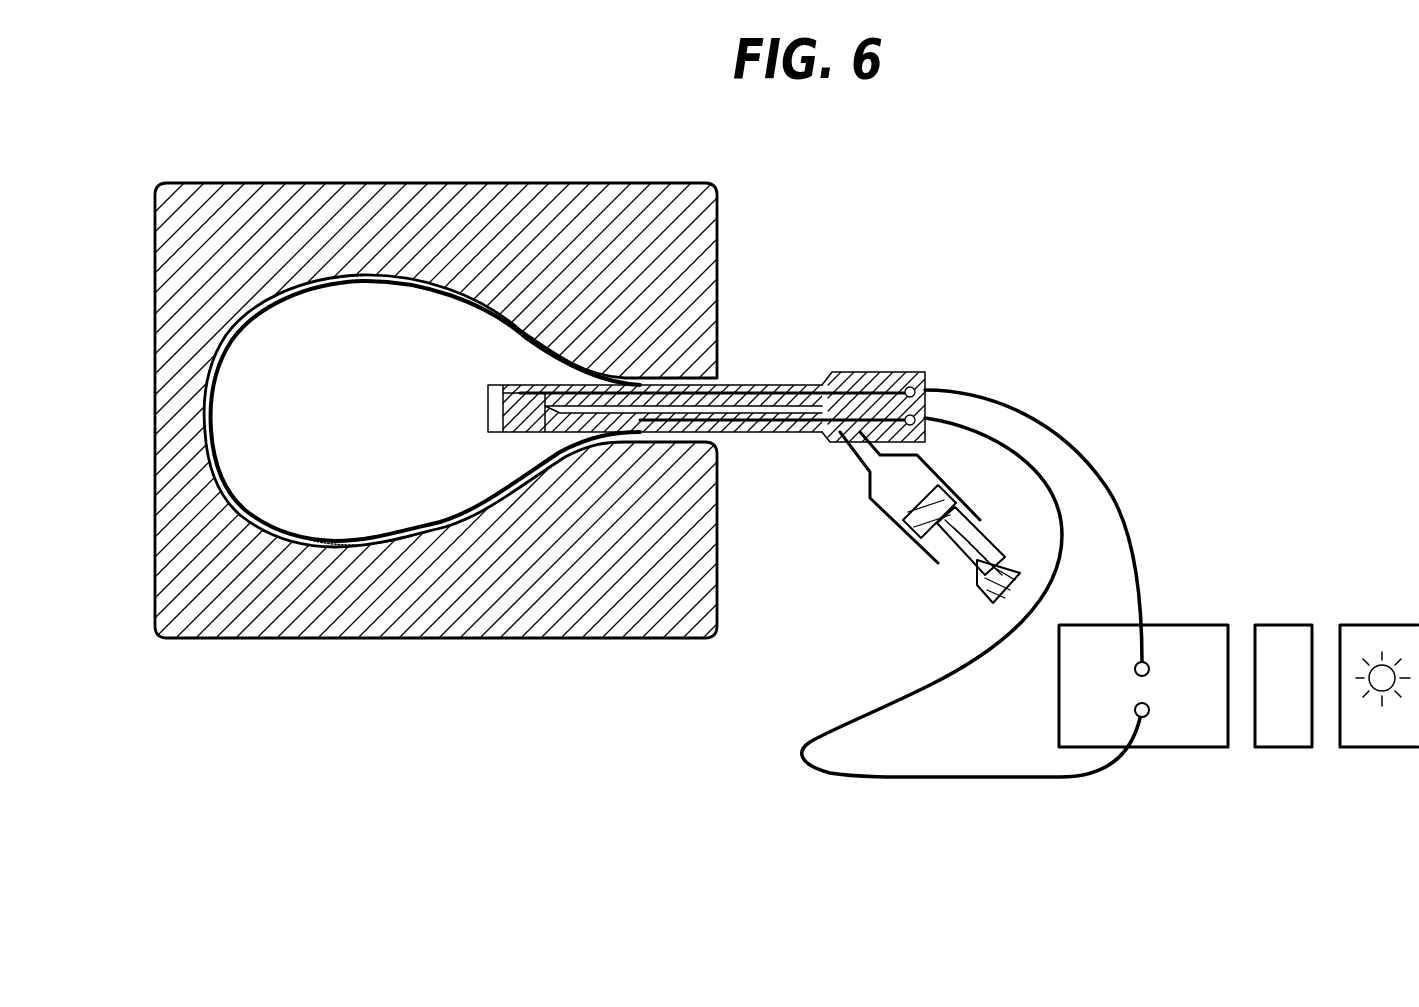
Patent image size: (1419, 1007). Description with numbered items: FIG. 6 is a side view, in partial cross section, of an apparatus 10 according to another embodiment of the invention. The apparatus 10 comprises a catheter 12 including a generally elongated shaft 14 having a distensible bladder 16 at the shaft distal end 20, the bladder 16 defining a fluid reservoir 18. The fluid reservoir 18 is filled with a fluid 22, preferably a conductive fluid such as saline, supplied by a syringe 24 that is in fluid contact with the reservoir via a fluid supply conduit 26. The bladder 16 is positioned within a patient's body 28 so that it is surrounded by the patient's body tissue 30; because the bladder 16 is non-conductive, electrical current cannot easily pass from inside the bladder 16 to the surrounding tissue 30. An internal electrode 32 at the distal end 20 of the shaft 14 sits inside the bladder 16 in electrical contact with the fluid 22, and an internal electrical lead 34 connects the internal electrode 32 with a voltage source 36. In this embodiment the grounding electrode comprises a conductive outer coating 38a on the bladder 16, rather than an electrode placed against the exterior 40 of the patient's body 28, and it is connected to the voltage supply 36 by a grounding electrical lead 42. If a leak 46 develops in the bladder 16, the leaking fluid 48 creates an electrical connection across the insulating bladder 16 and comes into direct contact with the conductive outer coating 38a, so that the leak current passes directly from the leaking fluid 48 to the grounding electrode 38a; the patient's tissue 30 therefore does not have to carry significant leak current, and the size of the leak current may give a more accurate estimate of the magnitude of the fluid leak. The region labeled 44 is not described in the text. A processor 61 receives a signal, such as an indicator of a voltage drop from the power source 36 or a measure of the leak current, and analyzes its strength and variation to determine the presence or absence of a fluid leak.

The apparatus 10 is at (849, 207).
The catheter 12 is at (815, 383).
The shaft 14 is at (765, 383).
The distensible bladder 16 is at (210, 383).
The fluid reservoir 18 is at (365, 348).
The shaft distal end 20 is at (522, 333).
The fluid 22 is at (307, 310).
The syringe 24 is at (890, 520).
The fluid supply conduit 26 is at (822, 435).
The patient's body 28 is at (590, 185).
The body tissue 30 is at (522, 215).
The internal electrode 32 is at (496, 430).
The internal electrical lead 34 is at (845, 372).
The voltage source 36 is at (1173, 747).
The conductive outer coating 38a is at (558, 452).
The exterior of the patient's body 40 is at (310, 640).
The grounding electrical lead 42 is at (795, 435).
The balloon fold 44 is at (327, 530).
The leak 46 is at (348, 545).
The leaking fluid 48 is at (1382, 747).
The processor 61 is at (1290, 747).